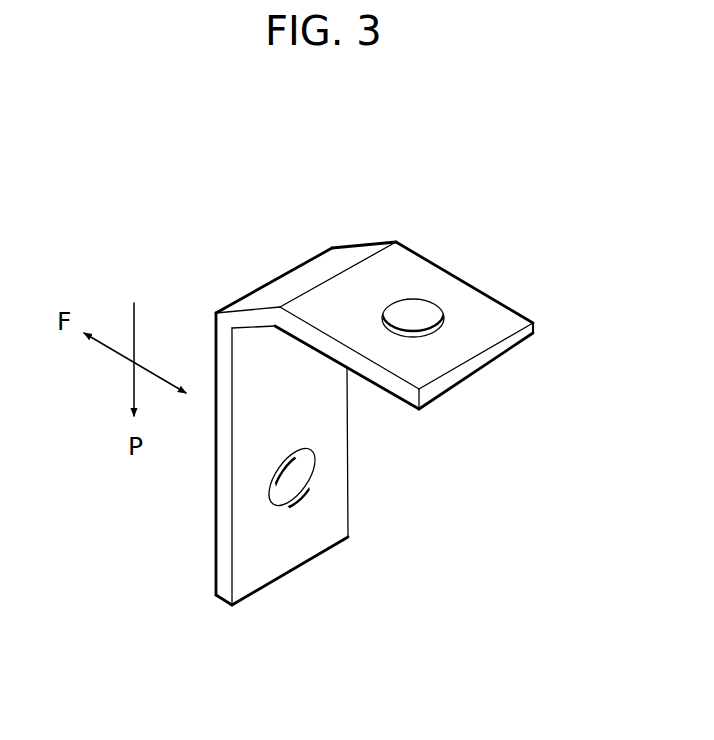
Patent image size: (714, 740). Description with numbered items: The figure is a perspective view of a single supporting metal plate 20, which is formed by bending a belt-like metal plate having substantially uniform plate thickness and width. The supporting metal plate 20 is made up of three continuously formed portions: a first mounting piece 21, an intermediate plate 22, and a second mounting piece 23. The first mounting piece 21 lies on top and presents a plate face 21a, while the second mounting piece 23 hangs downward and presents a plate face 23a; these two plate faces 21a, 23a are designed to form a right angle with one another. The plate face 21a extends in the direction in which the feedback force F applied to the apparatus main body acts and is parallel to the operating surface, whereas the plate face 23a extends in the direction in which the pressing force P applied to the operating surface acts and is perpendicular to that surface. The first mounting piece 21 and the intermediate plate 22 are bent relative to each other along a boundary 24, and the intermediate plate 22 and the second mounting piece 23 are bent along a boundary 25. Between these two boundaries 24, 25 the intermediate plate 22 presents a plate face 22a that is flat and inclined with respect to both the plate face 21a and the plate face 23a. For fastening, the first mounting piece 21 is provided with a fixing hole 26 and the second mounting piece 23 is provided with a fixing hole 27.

The supporting metal plate 20 is at (432, 228).
The first mounting piece 21 is at (492, 323).
The plate face of the first mounting piece 21a is at (447, 355).
The intermediate plate 22 is at (292, 283).
The plate face of the intermediate plate 22a is at (320, 272).
The second mounting piece 23 is at (333, 492).
The plate face of the second mounting piece 23a is at (252, 458).
The boundary 24 is at (351, 257).
The boundary 25 is at (253, 293).
The fixing hole 26 is at (427, 310).
The fixing hole 27 is at (292, 490).